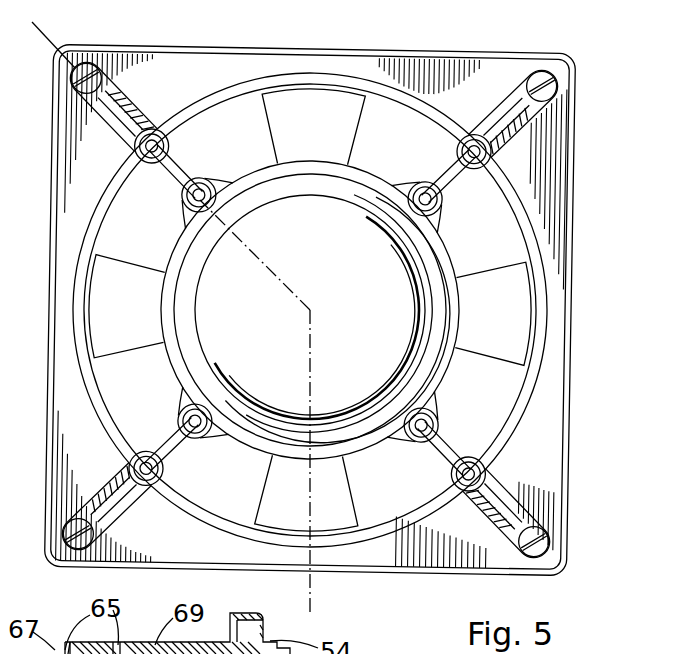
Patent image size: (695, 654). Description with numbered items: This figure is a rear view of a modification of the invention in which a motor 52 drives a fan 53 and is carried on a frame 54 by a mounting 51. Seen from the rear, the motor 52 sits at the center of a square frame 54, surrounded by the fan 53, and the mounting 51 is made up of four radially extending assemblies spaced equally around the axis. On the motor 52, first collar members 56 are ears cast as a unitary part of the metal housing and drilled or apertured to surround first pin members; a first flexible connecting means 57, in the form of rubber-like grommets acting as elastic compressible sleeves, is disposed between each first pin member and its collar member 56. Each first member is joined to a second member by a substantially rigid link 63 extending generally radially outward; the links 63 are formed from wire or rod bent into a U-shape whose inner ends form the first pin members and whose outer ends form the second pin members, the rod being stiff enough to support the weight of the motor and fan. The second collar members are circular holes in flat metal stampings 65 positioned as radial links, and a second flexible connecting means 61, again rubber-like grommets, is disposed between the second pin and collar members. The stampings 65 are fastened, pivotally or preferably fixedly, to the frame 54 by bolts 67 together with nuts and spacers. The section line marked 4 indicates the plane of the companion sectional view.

The section line 4- 4 is at (47, 34).
The mounting 51 is at (500, 462).
The motor 52 is at (366, 352).
The fan 53 is at (513, 342).
The frame 54 is at (567, 223).
The first collar member 56 is at (432, 409).
The first flexible connecting means 57 is at (426, 442).
The second flexible connecting means 61 is at (476, 502).
The rigid link 63 is at (452, 460).
The metal stamping 65 is at (527, 503).
The bolt 67 is at (546, 544).